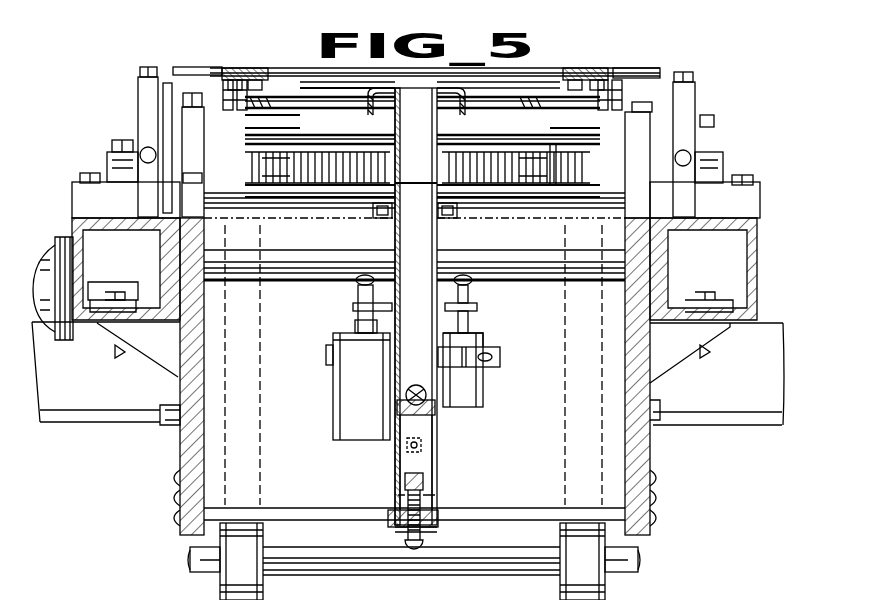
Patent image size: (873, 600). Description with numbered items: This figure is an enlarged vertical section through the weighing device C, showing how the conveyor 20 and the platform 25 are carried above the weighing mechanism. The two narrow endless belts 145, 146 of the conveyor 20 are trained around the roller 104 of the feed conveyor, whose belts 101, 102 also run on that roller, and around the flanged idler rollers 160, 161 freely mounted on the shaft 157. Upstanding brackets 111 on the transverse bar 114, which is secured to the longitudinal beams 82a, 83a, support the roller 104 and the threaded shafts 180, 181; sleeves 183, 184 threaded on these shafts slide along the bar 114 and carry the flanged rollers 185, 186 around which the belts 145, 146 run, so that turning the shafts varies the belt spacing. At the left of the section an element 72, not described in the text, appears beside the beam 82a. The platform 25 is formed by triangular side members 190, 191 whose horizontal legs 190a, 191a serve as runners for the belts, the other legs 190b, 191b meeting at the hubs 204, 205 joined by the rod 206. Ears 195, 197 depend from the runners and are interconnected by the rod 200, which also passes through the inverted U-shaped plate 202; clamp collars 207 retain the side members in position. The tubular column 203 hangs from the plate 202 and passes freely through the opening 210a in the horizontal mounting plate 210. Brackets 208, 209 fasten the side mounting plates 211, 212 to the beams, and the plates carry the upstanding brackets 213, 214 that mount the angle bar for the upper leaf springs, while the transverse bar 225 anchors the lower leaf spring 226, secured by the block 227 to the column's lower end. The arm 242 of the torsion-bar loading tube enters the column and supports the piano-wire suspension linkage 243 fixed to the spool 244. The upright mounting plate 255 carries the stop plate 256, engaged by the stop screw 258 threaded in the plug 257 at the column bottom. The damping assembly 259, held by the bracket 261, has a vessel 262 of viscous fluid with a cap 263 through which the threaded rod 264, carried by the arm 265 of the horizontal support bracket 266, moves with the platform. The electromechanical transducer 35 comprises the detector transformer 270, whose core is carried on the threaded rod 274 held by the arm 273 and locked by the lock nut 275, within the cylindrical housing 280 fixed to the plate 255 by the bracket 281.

The conveyor 20 is at (607, 65).
The platform 25 is at (226, 63).
The electromechanical transducer 35 is at (494, 404).
The drive wheel 72 is at (70, 222).
The longitudinal beam 82a is at (128, 228).
The longitudinal beam 83a is at (708, 228).
The endless belt 101 is at (185, 66).
The endless belt 102 is at (635, 66).
The roller 104 is at (278, 72).
The bracket 111 is at (137, 136).
The transverse bar 114 is at (86, 196).
The endless belt 145 is at (230, 583).
The endless belt 146 is at (560, 583).
The shaft 157 is at (320, 560).
The flanged idler roller 160 is at (245, 545).
The flanged idler roller 161 is at (560, 538).
The threaded shaft 180 is at (372, 168).
The threaded shaft 181 is at (498, 168).
The sleeve 183 is at (282, 160).
The sleeve 184 is at (560, 152).
The flanged roller 185 is at (290, 135).
The flanged roller 186 is at (545, 136).
The side member 190 is at (222, 118).
The horizontal leg 190a is at (262, 104).
The leg 190b is at (230, 128).
The side member 191 is at (570, 143).
The horizontal leg 191a is at (568, 104).
The leg 191b is at (620, 140).
The ear 195 is at (306, 96).
The ear 197 is at (520, 100).
The rod 200 is at (368, 104).
The inverted U-shaped plate 202 is at (448, 108).
The tubular column 203 is at (416, 306).
The hub 204 is at (235, 213).
The hub 205 is at (585, 222).
The rod 206 is at (415, 190).
The clamp collar 207 is at (225, 95).
The bracket 208 is at (150, 355).
The bracket 209 is at (668, 352).
The horizontal mounting plate 210 is at (340, 218).
The opening 210a is at (400, 218).
The side mounting plate 211 is at (175, 400).
The side mounting plate 212 is at (640, 400).
The bracket 213 is at (190, 120).
The bracket 214 is at (660, 140).
The transverse bar 225 is at (274, 512).
The leaf spring 226 is at (437, 505).
The block 227 is at (430, 532).
The arm 242 is at (405, 398).
The suspension linkage 243 is at (432, 410).
The spool 244 is at (400, 415).
The mounting plate 255 is at (281, 469).
The stop plate 256 is at (422, 480).
The plug 257 is at (395, 512).
The stop screw 258 is at (408, 538).
The damping assembly 259 is at (336, 394).
The bracket 261 is at (326, 352).
The vessel 262 is at (350, 376).
The cap 263 is at (355, 326).
The threaded rod 264 is at (358, 318).
The arm 265 is at (355, 298).
The horizontal support bracket 266 is at (440, 300).
The detector transformer 270 is at (487, 337).
The arm 273 is at (480, 306).
The threaded rod 274 is at (468, 326).
The lock nut 275 is at (470, 298).
The cylindrical housing 280 is at (460, 383).
The bracket 281 is at (500, 360).
The weighing device C is at (551, 63).